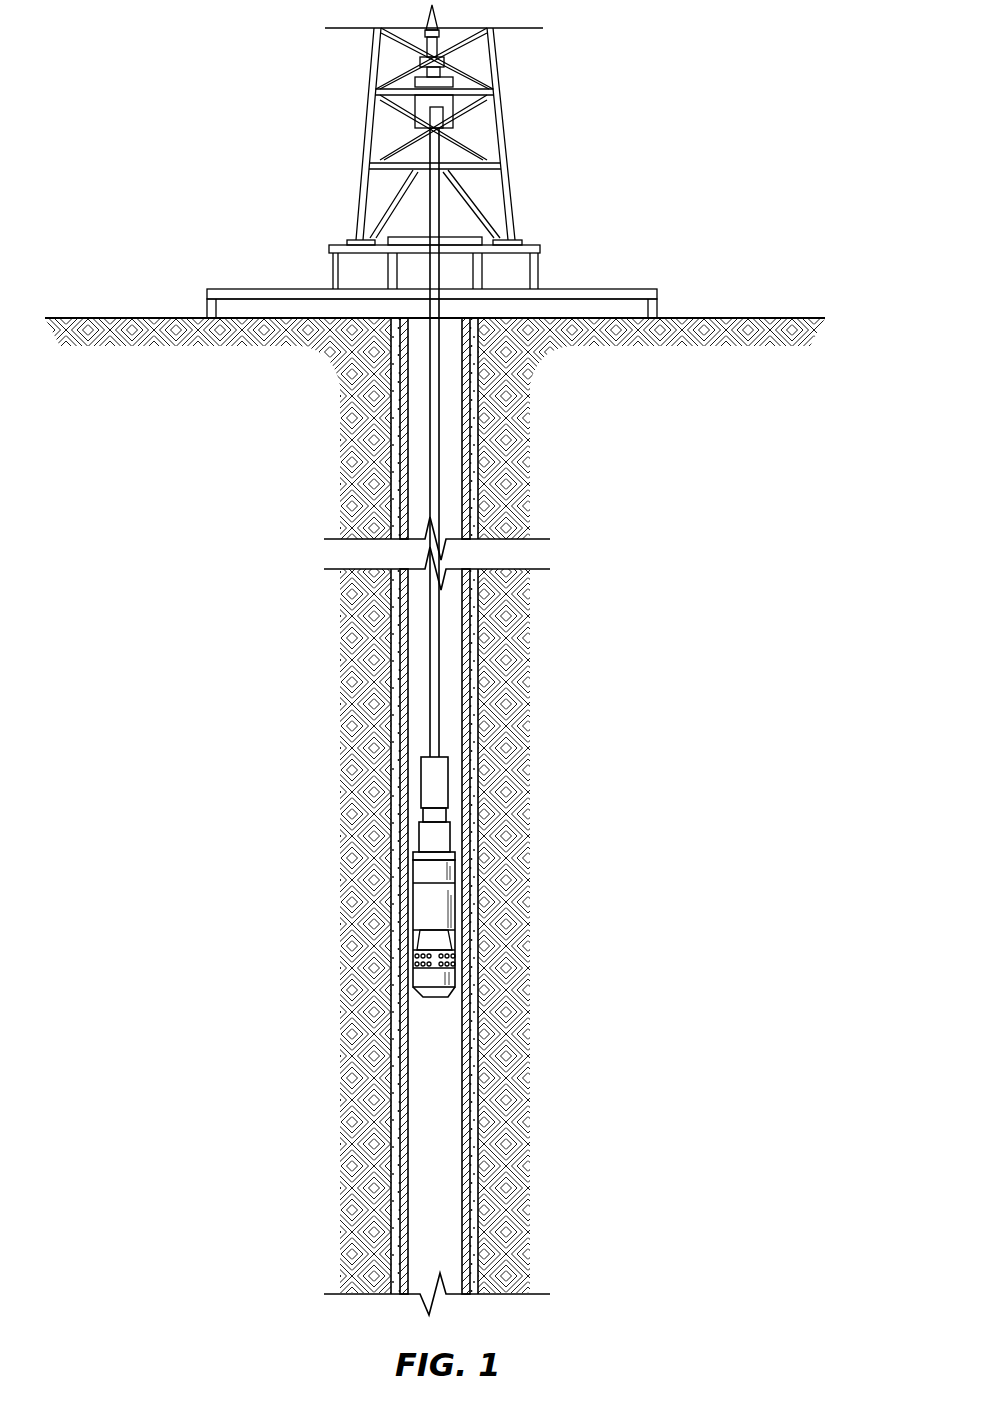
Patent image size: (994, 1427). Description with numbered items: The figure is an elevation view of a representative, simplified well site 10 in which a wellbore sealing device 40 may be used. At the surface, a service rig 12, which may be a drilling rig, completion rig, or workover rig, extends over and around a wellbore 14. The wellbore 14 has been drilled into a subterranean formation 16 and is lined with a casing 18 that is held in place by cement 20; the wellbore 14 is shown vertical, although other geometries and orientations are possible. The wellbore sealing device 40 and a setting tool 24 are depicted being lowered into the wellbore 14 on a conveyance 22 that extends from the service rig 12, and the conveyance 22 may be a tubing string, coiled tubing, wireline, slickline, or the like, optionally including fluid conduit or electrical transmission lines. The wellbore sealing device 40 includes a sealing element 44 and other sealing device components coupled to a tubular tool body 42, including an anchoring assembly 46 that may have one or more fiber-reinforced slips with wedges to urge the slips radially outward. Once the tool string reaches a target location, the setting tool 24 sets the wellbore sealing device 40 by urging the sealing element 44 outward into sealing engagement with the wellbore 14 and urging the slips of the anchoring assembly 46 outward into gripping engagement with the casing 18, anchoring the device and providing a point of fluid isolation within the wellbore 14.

The well site 10 is at (606, 68).
The service rig 12 is at (366, 124).
The wellbore 14 is at (483, 686).
The subterranean formation 16 is at (513, 1172).
The casing 18 is at (467, 1100).
The cement 20 is at (473, 724).
The conveyance 22 is at (440, 652).
The setting tool 24 is at (445, 783).
The wellbore sealing device 40 is at (438, 936).
The tubular tool body 42 is at (417, 942).
The sealing element 44 is at (423, 908).
The anchoring assembly 46 is at (415, 955).